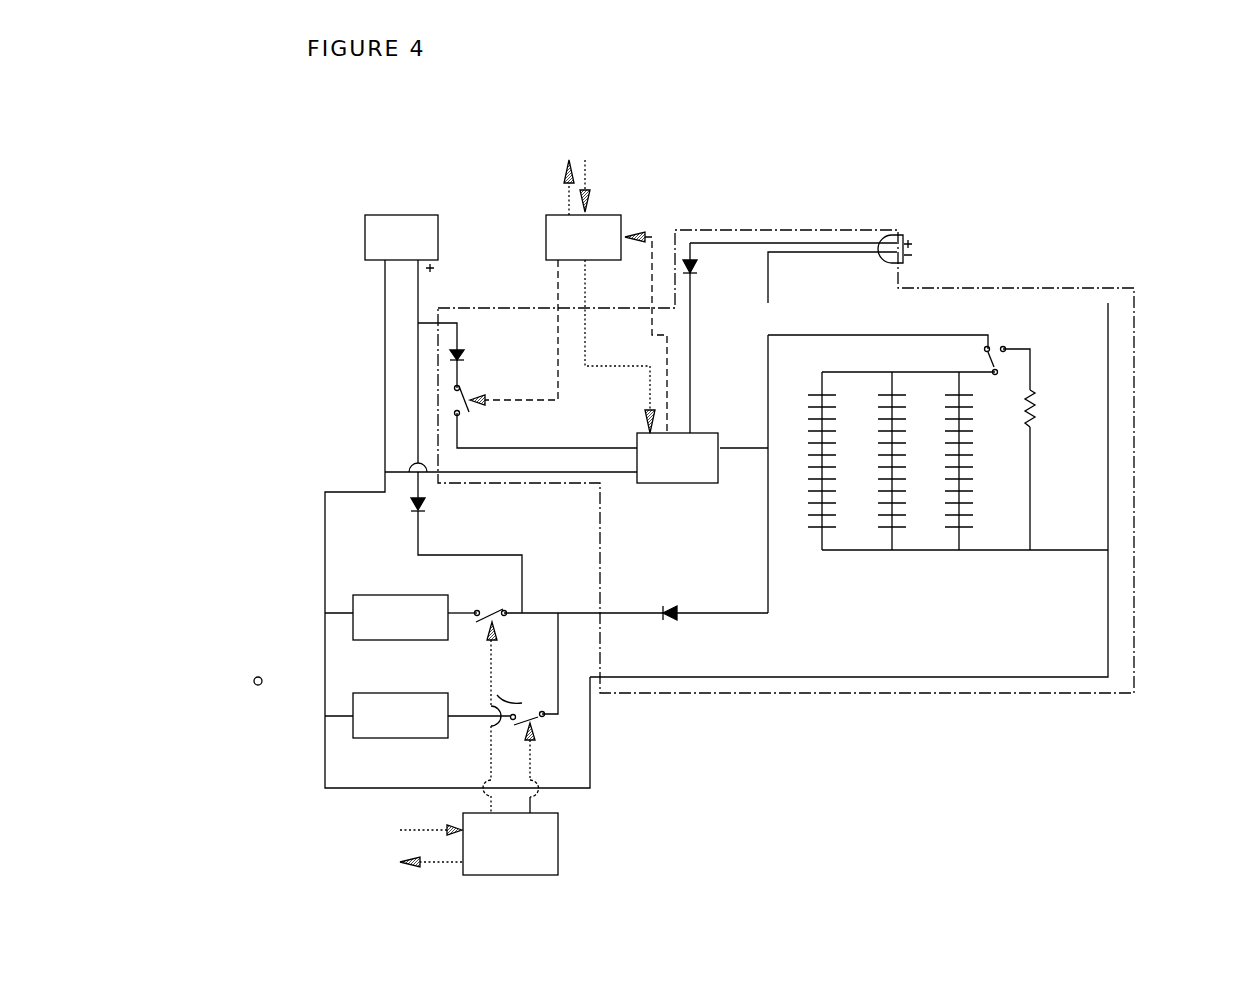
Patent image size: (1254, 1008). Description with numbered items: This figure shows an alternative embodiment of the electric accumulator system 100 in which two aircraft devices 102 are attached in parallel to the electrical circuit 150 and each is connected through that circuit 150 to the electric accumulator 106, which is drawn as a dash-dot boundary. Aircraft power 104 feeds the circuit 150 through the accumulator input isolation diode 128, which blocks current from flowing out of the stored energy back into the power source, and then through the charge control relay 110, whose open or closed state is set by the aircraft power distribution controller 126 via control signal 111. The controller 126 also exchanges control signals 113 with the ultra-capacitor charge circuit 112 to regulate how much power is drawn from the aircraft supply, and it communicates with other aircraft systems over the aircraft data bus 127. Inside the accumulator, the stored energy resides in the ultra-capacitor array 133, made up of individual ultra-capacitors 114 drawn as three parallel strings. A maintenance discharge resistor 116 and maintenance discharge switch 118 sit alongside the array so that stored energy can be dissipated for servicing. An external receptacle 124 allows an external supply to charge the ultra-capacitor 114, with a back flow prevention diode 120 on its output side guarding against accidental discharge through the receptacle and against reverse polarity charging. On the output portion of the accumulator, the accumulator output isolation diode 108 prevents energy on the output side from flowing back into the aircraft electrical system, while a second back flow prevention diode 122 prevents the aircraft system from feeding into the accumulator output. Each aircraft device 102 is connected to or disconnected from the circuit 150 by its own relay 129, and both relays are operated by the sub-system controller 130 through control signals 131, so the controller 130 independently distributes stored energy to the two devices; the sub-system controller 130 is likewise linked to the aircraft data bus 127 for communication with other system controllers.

The power system 100 is at (255, 684).
The aircraft device 102 is at (377, 595).
The aircraft power 104 is at (363, 233).
The electric accumulator 106 is at (1033, 287).
The accumulator output isolation diode 108 is at (411, 503).
The charge control relay 110 is at (457, 399).
The control signal 111 is at (558, 338).
The ultra-capacitor charge circuit 112 is at (692, 485).
The control signals 113 is at (652, 325).
The ultra-capacitor 114 is at (812, 530).
The maintenance discharge resistor 116 is at (1033, 425).
The maintenance discharge switch 118 is at (999, 364).
The back flow prevention diode 120 is at (699, 261).
The back flow prevention diode 122 is at (672, 604).
The external receptacle 124 is at (898, 232).
The aircraft power distribution controller 126 is at (545, 227).
The aircraft data bus 127 is at (593, 173).
The accumulator input isolation diode 128 is at (452, 357).
The relay 129 is at (498, 612).
The sub-system controller 130 is at (560, 858).
The control signal 131 is at (527, 757).
The ultra-capacitor array 133 is at (917, 552).
The electrical circuit 150 is at (793, 676).